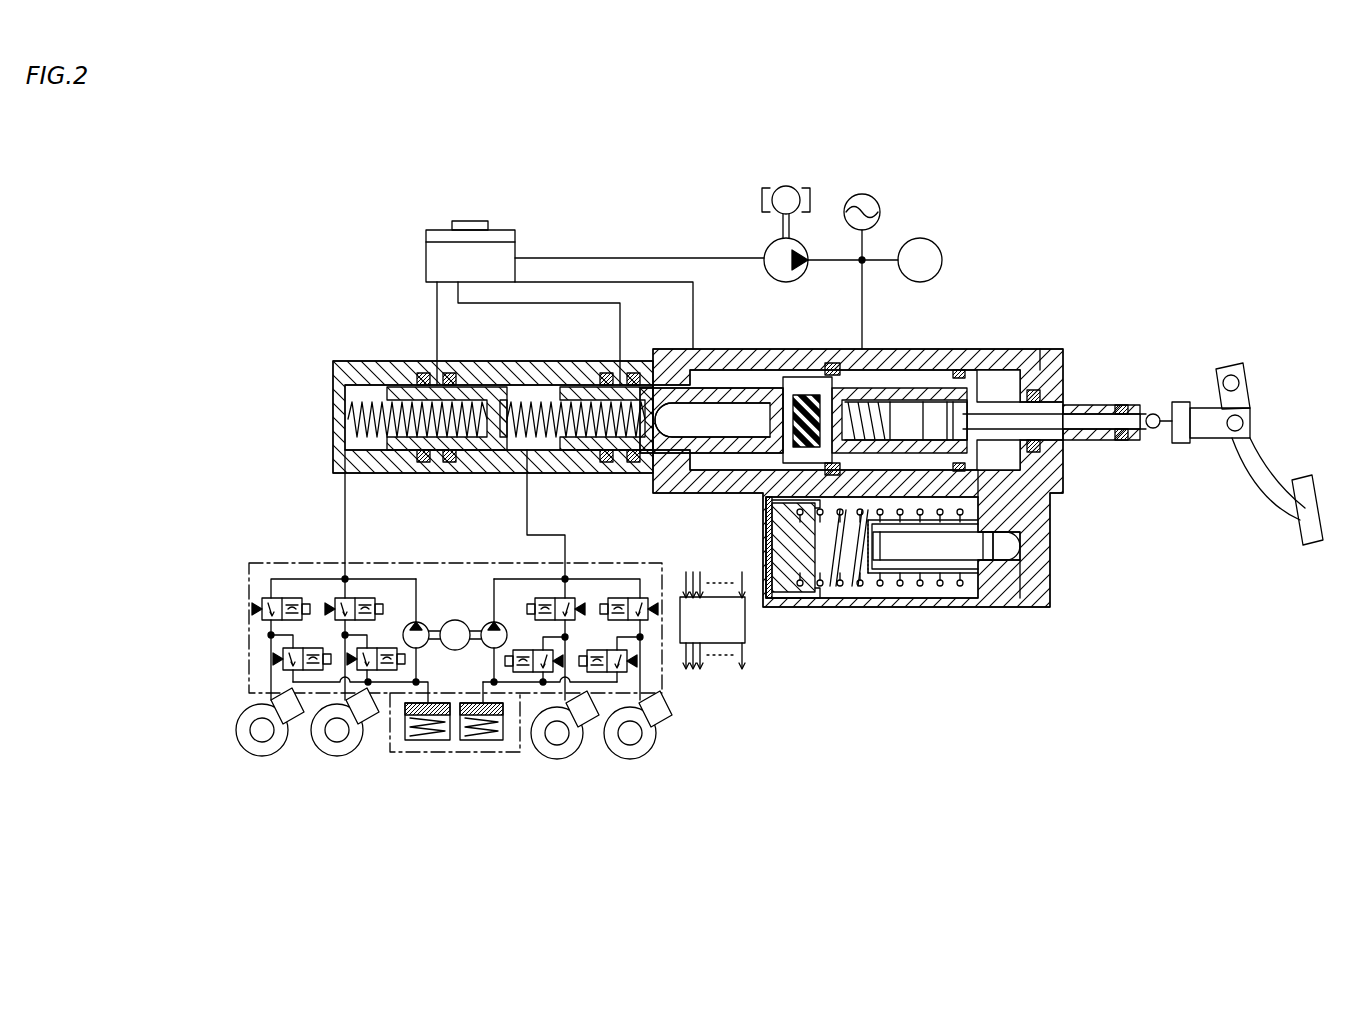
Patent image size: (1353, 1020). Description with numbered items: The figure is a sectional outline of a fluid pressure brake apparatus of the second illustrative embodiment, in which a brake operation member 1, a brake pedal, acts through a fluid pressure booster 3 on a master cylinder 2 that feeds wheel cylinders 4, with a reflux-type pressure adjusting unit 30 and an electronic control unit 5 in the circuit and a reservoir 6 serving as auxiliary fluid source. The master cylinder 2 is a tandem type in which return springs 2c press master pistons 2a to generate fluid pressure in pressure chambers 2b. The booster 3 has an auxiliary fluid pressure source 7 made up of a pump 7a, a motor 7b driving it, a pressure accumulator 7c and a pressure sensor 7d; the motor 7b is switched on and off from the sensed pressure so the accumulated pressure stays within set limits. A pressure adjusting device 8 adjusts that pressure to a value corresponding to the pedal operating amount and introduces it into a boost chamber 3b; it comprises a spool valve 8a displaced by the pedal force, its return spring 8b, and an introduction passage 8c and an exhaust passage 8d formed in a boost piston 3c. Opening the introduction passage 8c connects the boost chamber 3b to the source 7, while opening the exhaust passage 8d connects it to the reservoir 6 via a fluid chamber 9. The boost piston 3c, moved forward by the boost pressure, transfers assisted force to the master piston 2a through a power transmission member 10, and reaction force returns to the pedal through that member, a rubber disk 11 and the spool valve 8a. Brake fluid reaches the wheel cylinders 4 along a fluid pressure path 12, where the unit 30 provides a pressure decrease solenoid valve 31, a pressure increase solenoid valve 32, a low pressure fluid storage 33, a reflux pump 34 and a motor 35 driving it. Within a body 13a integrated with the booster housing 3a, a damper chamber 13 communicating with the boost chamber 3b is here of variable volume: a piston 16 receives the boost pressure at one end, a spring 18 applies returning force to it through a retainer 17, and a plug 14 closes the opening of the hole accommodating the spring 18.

The brake operation member 1 is at (1308, 486).
The master cylinder 2 is at (514, 406).
The master piston 2a is at (473, 392).
The pressure chamber 2b is at (392, 440).
The return spring 2c is at (348, 418).
The fluid pressure booster 3 is at (980, 346).
The housing 3a is at (1055, 362).
The boost chamber 3b is at (1003, 380).
The boost piston 3c is at (1010, 480).
The wheel cylinder 4 is at (325, 728).
The electronic control unit 5 is at (745, 637).
The reservoir 6 is at (506, 232).
The auxiliary fluid pressure source 7 is at (829, 233).
The pump 7a is at (766, 248).
The motor 7b is at (780, 186).
The pressure accumulator 7c is at (872, 198).
The pressure sensor 7d is at (934, 240).
The pressure adjusting device 8 is at (903, 394).
The spool valve 8a is at (1010, 374).
The return spring 8b is at (822, 362).
The introduction passage 8c is at (912, 400).
The exhaust passage 8d is at (1025, 452).
The fluid chamber 9 is at (695, 470).
The power transmission member 10 is at (724, 432).
The rubber disk 11 is at (756, 494).
The fluid pressure path 12 is at (348, 536).
The damper chamber 13 is at (1022, 548).
The body 13a is at (1020, 582).
The plug 14 is at (805, 562).
The piston 16 is at (970, 555).
The retainer 17 is at (918, 588).
The spring 18 is at (858, 565).
The reflux-type pressure adjusting unit 30 is at (296, 562).
The pressure decrease solenoid valve 31 is at (290, 659).
The pressure increase solenoid valve 32 is at (262, 606).
The low pressure fluid storage 33 is at (470, 742).
The reflux pump 34 is at (420, 622).
The motor 35 is at (462, 620).